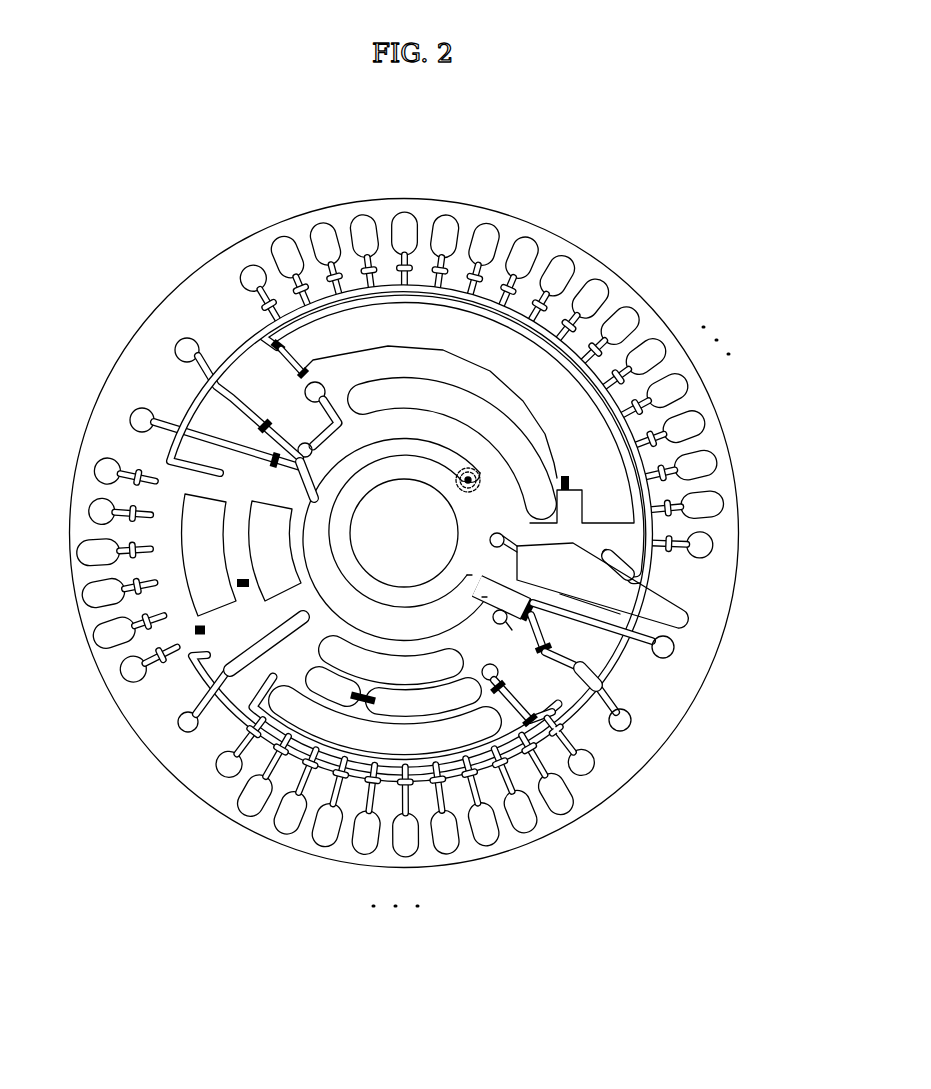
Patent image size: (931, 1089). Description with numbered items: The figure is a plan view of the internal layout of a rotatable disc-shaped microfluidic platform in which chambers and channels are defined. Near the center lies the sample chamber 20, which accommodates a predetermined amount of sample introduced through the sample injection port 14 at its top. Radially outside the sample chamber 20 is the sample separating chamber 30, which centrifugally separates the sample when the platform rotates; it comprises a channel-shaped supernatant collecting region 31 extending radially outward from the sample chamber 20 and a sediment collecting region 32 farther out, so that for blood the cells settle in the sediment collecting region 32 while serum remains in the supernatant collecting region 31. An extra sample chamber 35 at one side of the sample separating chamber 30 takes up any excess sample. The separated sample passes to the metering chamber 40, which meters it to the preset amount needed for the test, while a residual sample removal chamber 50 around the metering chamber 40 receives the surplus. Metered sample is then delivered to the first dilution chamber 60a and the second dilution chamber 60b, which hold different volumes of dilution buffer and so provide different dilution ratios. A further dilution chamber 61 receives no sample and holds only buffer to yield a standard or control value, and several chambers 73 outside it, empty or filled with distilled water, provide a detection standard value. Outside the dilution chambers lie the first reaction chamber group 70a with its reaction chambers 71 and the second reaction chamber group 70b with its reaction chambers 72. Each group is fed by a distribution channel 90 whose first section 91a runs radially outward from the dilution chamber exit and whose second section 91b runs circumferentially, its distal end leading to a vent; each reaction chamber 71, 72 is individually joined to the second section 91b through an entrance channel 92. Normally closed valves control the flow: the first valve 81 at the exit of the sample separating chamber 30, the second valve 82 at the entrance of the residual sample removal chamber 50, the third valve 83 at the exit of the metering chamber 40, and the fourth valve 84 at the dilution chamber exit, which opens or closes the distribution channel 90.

The sample injection port 14 is at (471, 492).
The sample chamber 20 is at (330, 592).
The sample separating chamber 30 is at (654, 619).
The supernatant collecting region 31 is at (683, 612).
The sediment collecting region 32 is at (667, 650).
The extra sample chamber 35 is at (568, 607).
The metering chamber 40 is at (483, 677).
The residual sample removal chamber 50 is at (598, 684).
The first dilution chamber 60a is at (365, 727).
The second dilution chamber 60b is at (545, 378).
The dilution chamber 61 is at (197, 563).
The first reaction chamber group 70a is at (389, 831).
The second reaction chamber group 70b is at (534, 402).
The reaction chamber 71 is at (568, 922).
The reaction chamber 72 is at (697, 415).
The chamber 73 is at (110, 636).
The first valve 81 is at (526, 606).
The second valve 82 is at (548, 647).
The third valve 83 is at (502, 683).
The fourth valve 84 is at (531, 714).
The distribution channel 90 is at (605, 795).
The first section 91a is at (583, 720).
The second section 91b is at (550, 740).
The entrance channel 92 is at (513, 740).